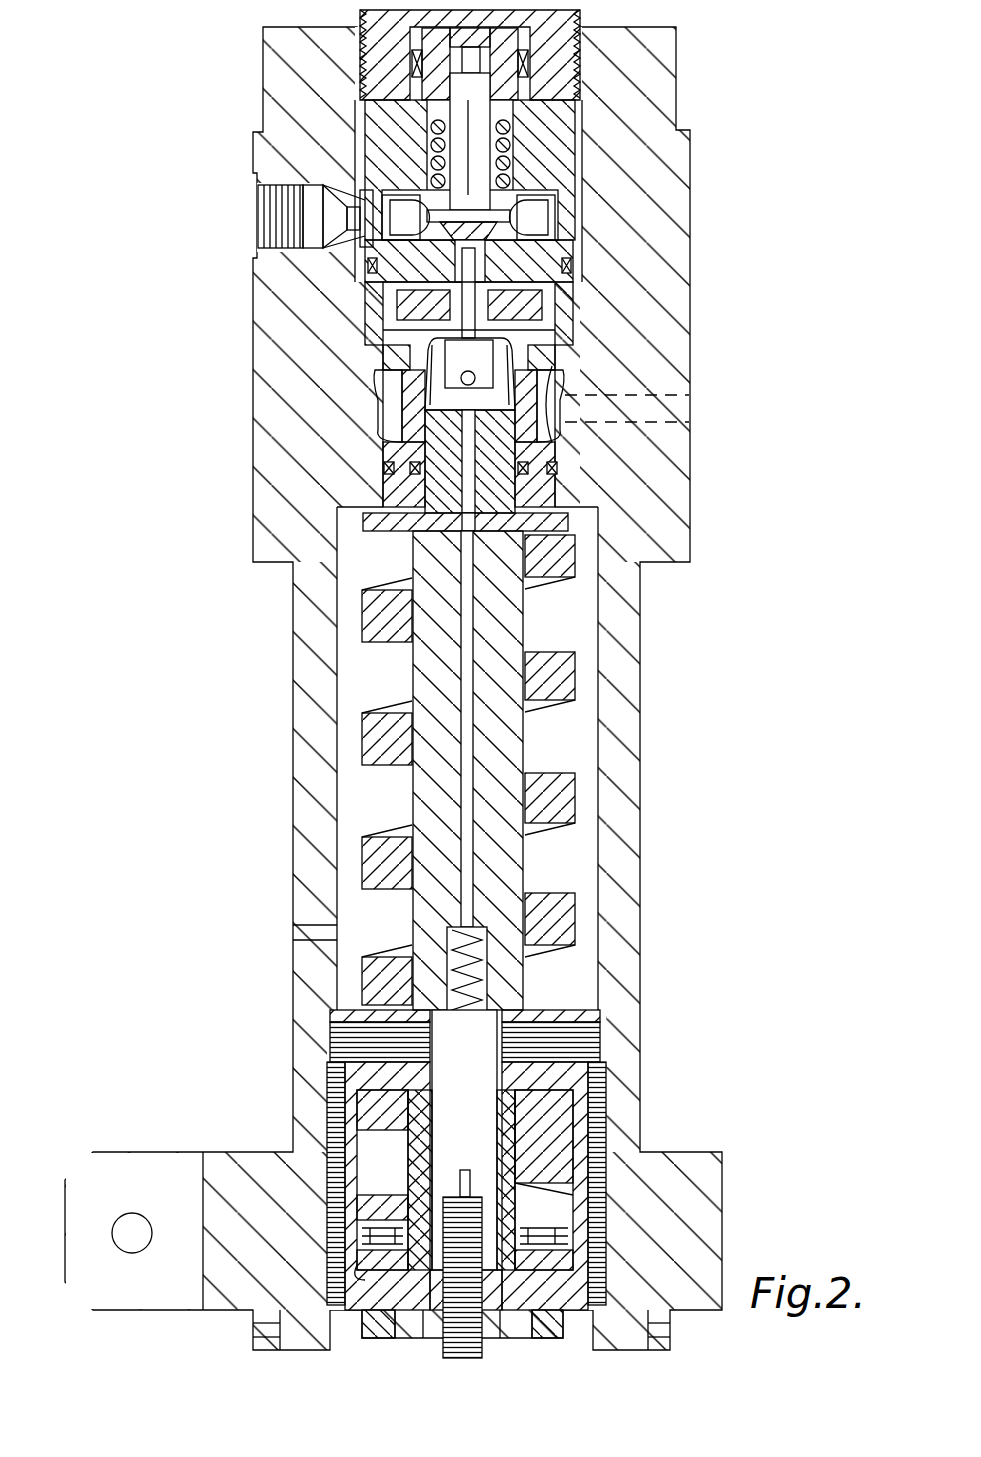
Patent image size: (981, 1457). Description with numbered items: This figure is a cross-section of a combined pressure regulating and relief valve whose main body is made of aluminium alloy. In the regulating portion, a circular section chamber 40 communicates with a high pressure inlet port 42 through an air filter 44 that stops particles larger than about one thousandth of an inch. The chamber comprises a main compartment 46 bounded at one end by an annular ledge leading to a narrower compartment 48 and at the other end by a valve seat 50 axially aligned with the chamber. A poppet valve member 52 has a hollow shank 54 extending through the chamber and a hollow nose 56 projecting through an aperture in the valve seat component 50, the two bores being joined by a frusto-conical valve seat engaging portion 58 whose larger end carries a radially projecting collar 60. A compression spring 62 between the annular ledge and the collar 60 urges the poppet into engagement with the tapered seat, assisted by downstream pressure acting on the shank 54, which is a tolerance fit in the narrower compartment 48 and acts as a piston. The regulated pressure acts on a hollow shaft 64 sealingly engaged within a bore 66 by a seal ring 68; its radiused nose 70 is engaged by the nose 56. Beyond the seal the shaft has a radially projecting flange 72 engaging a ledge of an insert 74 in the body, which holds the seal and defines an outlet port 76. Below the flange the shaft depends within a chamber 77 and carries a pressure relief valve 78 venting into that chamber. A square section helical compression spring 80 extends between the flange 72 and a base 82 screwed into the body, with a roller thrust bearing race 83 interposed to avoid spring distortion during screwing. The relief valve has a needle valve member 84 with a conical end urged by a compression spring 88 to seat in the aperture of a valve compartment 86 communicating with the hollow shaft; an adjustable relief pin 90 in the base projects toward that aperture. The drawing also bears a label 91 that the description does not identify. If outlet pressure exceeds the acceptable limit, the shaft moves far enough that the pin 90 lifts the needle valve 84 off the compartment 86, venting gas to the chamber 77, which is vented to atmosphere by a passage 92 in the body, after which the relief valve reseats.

The chamber 40 is at (600, 70).
The high pressure inlet port 42 is at (300, 204).
The air filter 44 is at (395, 225).
The main compartment 46 is at (440, 140).
The narrower compartment 48 is at (452, 40).
The valve seat 50 is at (525, 232).
The poppet valve member 52 is at (505, 230).
The hollow shank 54 is at (483, 115).
The hollow nose 56 is at (560, 305).
The frusto-conical valve seat engaging portion 58 is at (565, 262).
The radially projecting collar 60 is at (515, 150).
The compression spring 62 is at (425, 92).
The hollow shaft 64 is at (430, 445).
The bore 66 is at (552, 468).
The seal ring 68 is at (388, 468).
The radiused nose 70 is at (530, 348).
The radially projecting flange 72 is at (565, 522).
The insert 74 is at (535, 440).
The outlet port 76 is at (555, 395).
The chamber 77 is at (350, 752).
The pressure relief valve 78 is at (332, 1045).
The square section helical compression spring 80 is at (365, 850).
The base 82 is at (420, 1180).
The roller thrust bearing race 83 is at (545, 1222).
The needle valve member 84 is at (485, 1065).
The valve compartment 86 is at (520, 1120).
The compression spring 88 is at (450, 965).
The adjustable relief pin 90 is at (355, 1230).
The plunger 91 is at (440, 1068).
The passage 92 is at (305, 935).